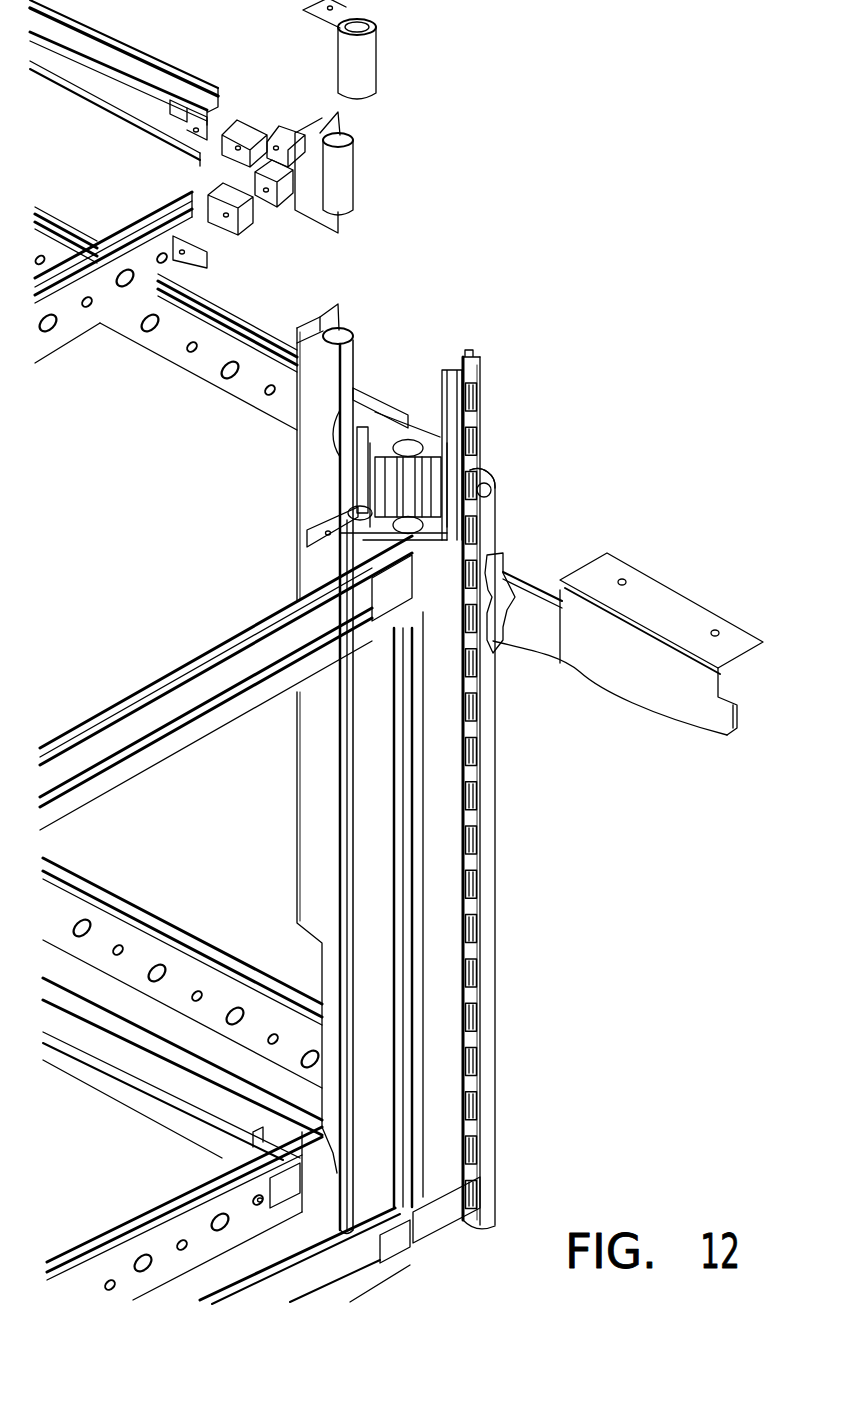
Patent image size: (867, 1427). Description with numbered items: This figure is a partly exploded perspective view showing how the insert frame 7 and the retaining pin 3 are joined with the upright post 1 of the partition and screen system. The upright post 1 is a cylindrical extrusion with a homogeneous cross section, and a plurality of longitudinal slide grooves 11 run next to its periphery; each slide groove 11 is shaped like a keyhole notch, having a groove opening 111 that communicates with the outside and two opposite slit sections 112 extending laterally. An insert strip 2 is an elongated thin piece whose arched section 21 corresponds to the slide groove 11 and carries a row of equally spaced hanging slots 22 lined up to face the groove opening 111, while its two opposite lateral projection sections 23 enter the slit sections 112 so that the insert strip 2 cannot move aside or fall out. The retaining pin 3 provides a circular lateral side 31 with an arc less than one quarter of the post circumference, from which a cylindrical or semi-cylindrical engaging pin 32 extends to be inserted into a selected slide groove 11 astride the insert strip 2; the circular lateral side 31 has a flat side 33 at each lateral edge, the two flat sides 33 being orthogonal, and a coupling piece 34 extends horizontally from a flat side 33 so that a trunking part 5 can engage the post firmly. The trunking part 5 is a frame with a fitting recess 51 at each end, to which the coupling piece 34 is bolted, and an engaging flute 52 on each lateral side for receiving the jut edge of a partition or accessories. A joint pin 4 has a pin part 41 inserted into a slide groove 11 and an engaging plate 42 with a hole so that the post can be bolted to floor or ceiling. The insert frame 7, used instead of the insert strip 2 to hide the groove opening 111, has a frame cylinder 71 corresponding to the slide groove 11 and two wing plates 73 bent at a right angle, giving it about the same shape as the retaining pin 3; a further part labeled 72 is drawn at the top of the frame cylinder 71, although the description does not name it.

The upright post 1 is at (613, 780).
The groove opening 111 is at (497, 548).
The slit sections 112 is at (467, 356).
The insert strip 2 is at (526, 790).
The arched section 21 is at (467, 467).
The hanging slots 22 is at (472, 445).
The lateral projection sections 23 is at (470, 378).
The retaining pin 3 is at (425, 418).
The circular lateral side 31 is at (323, 125).
The engaging pin 32 is at (347, 180).
The flat side 33 is at (323, 197).
The coupling piece 34 is at (247, 228).
The joint pin 4 is at (399, 49).
The pin part 41 is at (364, 73).
The engaging plate 42 is at (363, 2).
The trunking part 5 is at (208, 77).
The fitting recess 51 is at (213, 118).
The engaging flute 52 is at (153, 63).
The insert frame 7 is at (379, 755).
The frame cylinder 71 is at (348, 353).
The hinge tab 72 is at (340, 317).
The wing plates 73 is at (322, 313).
The slide groove 11 is at (392, 447).